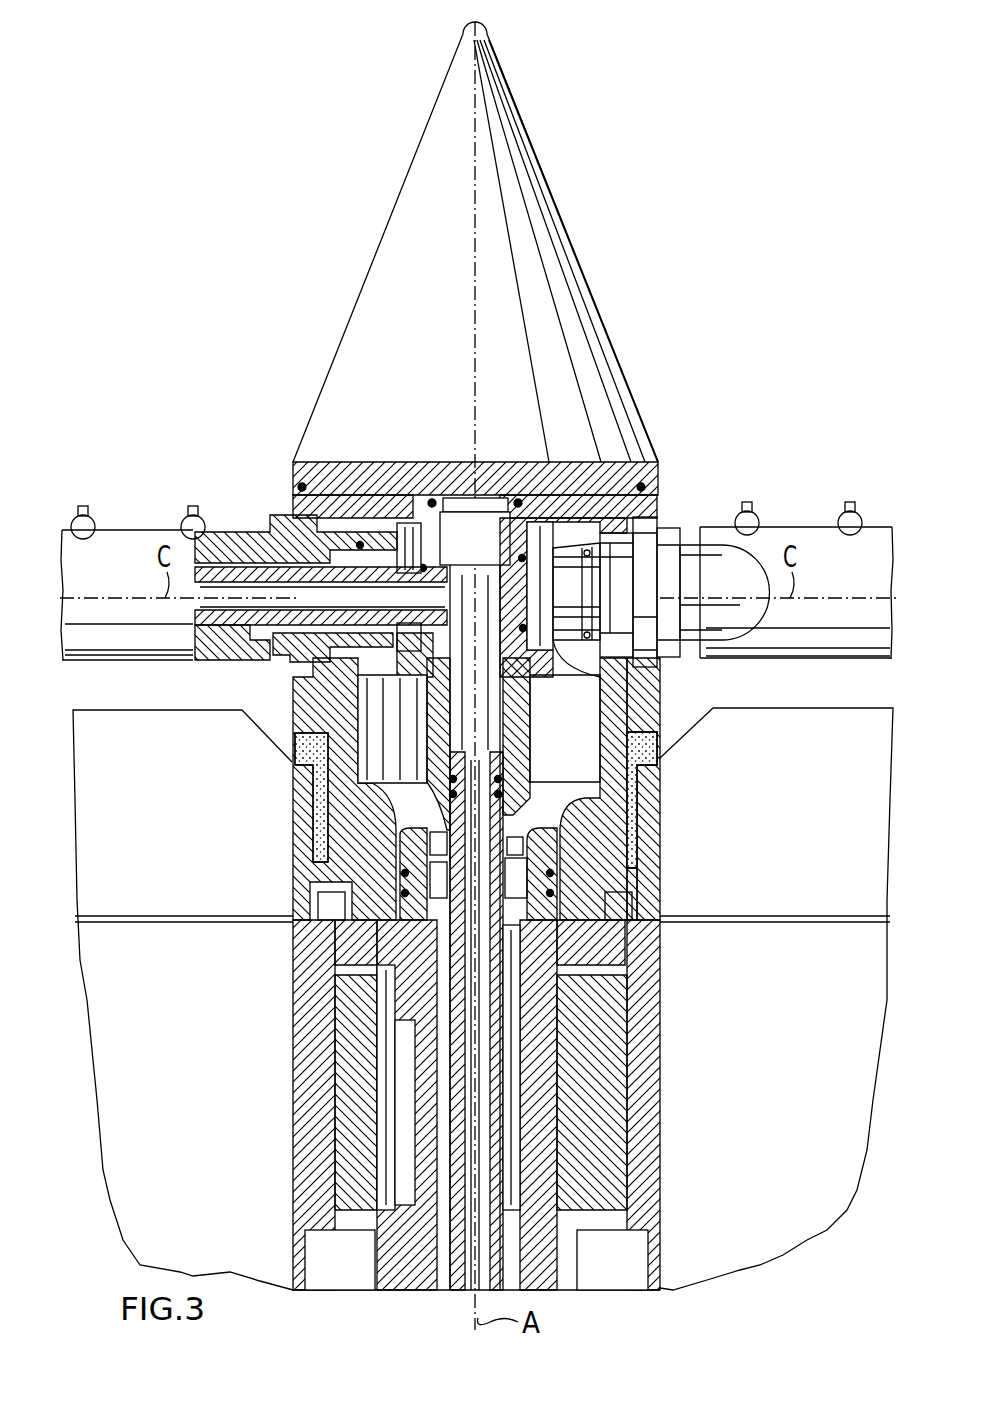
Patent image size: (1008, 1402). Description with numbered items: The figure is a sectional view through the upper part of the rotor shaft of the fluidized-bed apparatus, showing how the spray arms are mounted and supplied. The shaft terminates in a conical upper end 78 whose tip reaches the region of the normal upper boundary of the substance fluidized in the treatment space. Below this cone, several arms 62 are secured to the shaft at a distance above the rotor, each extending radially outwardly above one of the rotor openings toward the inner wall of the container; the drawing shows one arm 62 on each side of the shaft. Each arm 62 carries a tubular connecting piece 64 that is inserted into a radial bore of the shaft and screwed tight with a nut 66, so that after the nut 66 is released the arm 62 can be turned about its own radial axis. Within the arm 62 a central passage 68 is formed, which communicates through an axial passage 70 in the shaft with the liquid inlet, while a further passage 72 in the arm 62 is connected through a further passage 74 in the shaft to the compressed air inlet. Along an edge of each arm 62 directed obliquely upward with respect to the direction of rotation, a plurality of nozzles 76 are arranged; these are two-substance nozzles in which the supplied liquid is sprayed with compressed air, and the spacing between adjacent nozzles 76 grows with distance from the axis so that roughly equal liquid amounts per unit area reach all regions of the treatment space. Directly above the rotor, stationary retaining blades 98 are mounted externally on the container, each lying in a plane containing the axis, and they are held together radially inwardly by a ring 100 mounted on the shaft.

The arm 62 is at (144, 530).
The tubular connecting piece 64 is at (690, 553).
The nut 66 is at (670, 540).
The central passage 68 is at (222, 592).
The axial passage 70 is at (475, 1099).
The further passage 72 is at (239, 562).
The further passage 74 is at (440, 1152).
The nozzles 76 is at (85, 508).
The conical upper end 78 is at (372, 290).
The retaining blades 98 is at (157, 735).
The ring 100 is at (656, 820).